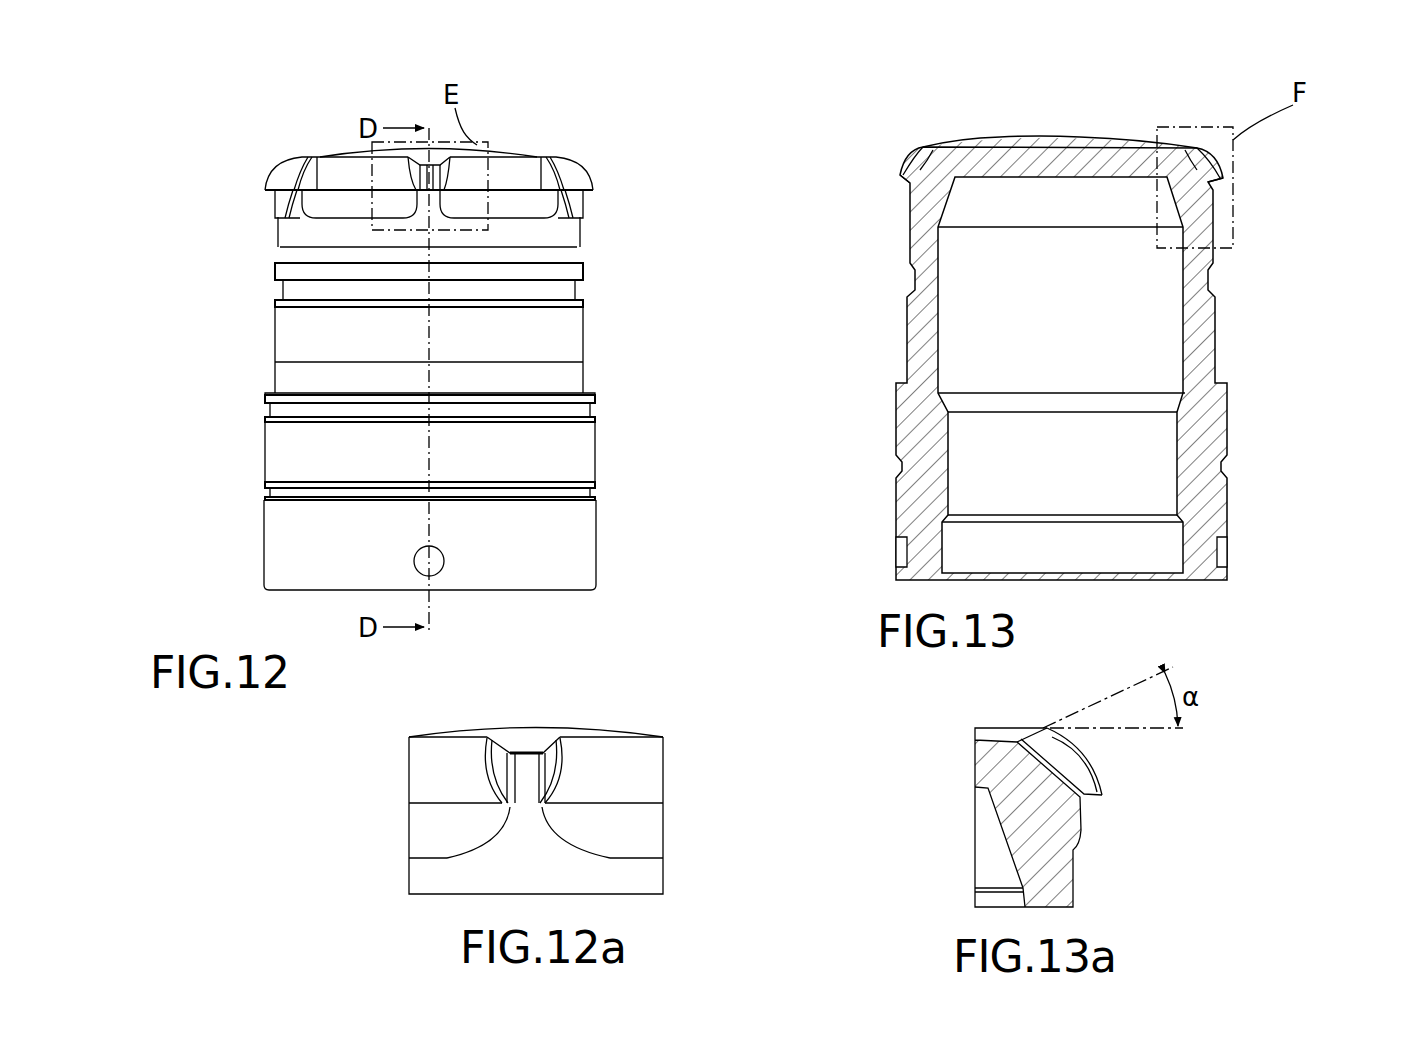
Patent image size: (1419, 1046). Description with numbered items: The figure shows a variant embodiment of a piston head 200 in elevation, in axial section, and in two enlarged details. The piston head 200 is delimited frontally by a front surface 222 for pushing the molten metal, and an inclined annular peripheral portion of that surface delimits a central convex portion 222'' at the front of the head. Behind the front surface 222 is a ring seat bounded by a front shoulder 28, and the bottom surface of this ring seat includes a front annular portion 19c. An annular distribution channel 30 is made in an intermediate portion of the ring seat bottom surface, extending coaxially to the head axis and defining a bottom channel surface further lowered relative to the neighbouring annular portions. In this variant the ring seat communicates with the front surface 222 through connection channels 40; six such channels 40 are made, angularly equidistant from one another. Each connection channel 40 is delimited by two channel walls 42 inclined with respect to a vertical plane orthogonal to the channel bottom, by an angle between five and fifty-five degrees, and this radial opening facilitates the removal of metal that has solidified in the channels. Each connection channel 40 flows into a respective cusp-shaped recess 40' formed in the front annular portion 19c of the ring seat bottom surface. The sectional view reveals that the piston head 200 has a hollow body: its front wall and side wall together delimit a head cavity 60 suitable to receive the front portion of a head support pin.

In FIG. 12, the piston head 200 is at (210, 388).
In FIG. 13, the piston head 200 is at (1282, 369).
In FIG. 12, the connection channel 40 is at (429, 141).
In FIG. 13, the connection channel 40 is at (1023, 128).
In FIG. 12A, the connection channel 40 is at (453, 742).
In FIG. 12, the cusp-shaped recess 40' is at (614, 260).
In FIG. 12, the front shoulder 28 is at (587, 193).
In FIG. 13, the front shoulder 28 is at (902, 178).
In FIG. 12, the front annular portion 19c is at (330, 203).
In FIG. 12A, the front annular portion 19c is at (637, 828).
In FIG. 13, the front surface 222 is at (1060, 101).
In FIG. 13, the central convex portion 222'' is at (1027, 99).
In FIG. 13, the head cavity 60 is at (1085, 323).
In FIG. 12A, the channel wall 42 is at (502, 767).
In FIG. 13A, the channel wall 42 is at (1097, 777).
In FIG. 12A, the distribution channel 30 is at (430, 877).